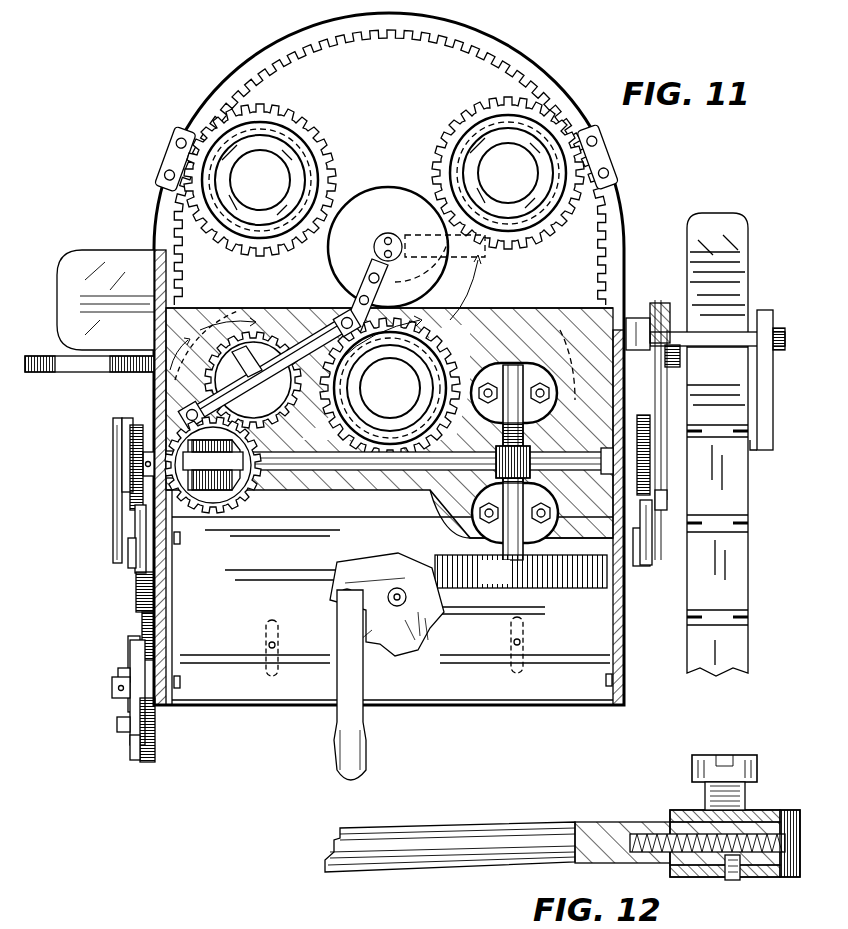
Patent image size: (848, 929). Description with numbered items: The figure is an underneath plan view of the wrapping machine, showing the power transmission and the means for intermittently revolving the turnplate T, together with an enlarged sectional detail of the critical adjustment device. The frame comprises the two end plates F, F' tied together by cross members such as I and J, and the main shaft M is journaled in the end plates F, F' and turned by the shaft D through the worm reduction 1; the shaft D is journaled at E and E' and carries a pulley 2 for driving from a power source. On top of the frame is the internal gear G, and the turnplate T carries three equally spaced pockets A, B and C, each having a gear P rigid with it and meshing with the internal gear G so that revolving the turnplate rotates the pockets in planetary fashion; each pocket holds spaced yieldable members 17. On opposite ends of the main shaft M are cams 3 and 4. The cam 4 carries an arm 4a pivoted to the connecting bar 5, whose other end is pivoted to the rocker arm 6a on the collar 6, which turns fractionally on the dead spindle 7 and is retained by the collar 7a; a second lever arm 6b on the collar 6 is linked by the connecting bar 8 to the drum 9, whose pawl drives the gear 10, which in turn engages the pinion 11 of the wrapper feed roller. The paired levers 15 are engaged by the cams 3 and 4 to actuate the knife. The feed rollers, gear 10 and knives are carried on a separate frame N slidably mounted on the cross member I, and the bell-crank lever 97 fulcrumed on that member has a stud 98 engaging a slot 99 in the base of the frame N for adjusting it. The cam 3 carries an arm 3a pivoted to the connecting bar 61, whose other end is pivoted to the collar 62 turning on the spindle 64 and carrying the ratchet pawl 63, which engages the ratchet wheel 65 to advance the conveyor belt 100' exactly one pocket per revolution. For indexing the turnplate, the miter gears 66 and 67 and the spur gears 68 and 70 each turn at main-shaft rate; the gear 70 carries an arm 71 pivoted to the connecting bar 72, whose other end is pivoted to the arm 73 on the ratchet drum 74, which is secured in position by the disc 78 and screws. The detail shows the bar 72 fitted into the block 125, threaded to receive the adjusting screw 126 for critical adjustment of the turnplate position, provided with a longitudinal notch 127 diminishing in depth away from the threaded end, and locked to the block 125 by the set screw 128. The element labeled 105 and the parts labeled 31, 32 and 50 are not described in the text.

In FIG. 11, the worm reduction 1 is at (538, 434).
In FIG. 11, the pulley 2 is at (521, 571).
In FIG. 11, the cam 3 is at (643, 418).
In FIG. 11, the arm 3a is at (652, 472).
In FIG. 11, the cam 4 is at (137, 425).
In FIG. 11, the arm 4a is at (127, 418).
In FIG. 11, the connecting bar 5 is at (113, 482).
In FIG. 11, the collar 6 is at (152, 702).
In FIG. 11, the rocker arm 6a is at (128, 656).
In FIG. 11, the lever arm 6b is at (130, 702).
In FIG. 11, the dead spindle 7 is at (112, 688).
In FIG. 11, the collar 7a is at (118, 674).
In FIG. 11, the connecting bar 8 is at (117, 726).
In FIG. 11, the drum 9 is at (135, 752).
In FIG. 11, the gear 10 is at (156, 750).
In FIG. 11, the pinion 11 is at (136, 592).
In FIG. 11, the lever 15 is at (135, 526).
In FIG. 11, the yieldable member 17 is at (384, 290).
In FIG. 11, the bracket 31 is at (165, 158).
In FIG. 11, the bracket 32 is at (608, 160).
In FIG. 11, the support block 50 is at (90, 372).
In FIG. 11, the connecting bar 61 is at (665, 441).
In FIG. 11, the collar 62 is at (637, 318).
In FIG. 11, the ratchet pawl 63 is at (660, 303).
In FIG. 11, the spindle 64 is at (778, 346).
In FIG. 11, the ratchet wheel 65 is at (676, 349).
In FIG. 11, the miter gear 66 is at (208, 492).
In FIG. 11, the miter gear 67 is at (222, 492).
In FIG. 11, the spur gear 68 is at (248, 491).
In FIG. 11, the spur gear 70 is at (253, 380).
In FIG. 11, the arm 71 is at (230, 385).
In FIG. 11, the connecting bar 72 is at (326, 340).
In FIG. 12, the connecting bar 72 is at (492, 826).
In FIG. 11, the arm 73 is at (384, 286).
In FIG. 11, the ratchet drum 74 is at (406, 247).
In FIG. 11, the disc 78 is at (373, 247).
In FIG. 11, the lever 97 is at (336, 620).
In FIG. 11, the stud 98 is at (393, 610).
In FIG. 11, the slot 99 is at (402, 606).
In FIG. 11, the belt 100' is at (742, 432).
In FIG. 11, the block 105 is at (716, 226).
In FIG. 12, the block 125 is at (690, 815).
In FIG. 12, the adjusting screw 126 is at (790, 822).
In FIG. 12, the longitudinal notch 127 is at (720, 864).
In FIG. 12, the set screw 128 is at (742, 876).
In FIG. 11, the pocket A is at (390, 388).
In FIG. 11, the pocket B is at (260, 180).
In FIG. 11, the pocket C is at (508, 173).
In FIG. 11, the shaft D is at (505, 553).
In FIG. 11, the journal E is at (525, 513).
In FIG. 11, the journal E' is at (525, 378).
In FIG. 11, the end plate F is at (185, 638).
In FIG. 11, the end plate F' is at (646, 639).
In FIG. 11, the internal gear G is at (180, 268).
In FIG. 11, the cross member I is at (393, 609).
In FIG. 11, the cross member J is at (508, 325).
In FIG. 11, the main shaft M is at (330, 490).
In FIG. 11, the frame N is at (422, 640).
In FIG. 11, the gear P is at (432, 156).
In FIG. 11, the turnplate T is at (412, 70).